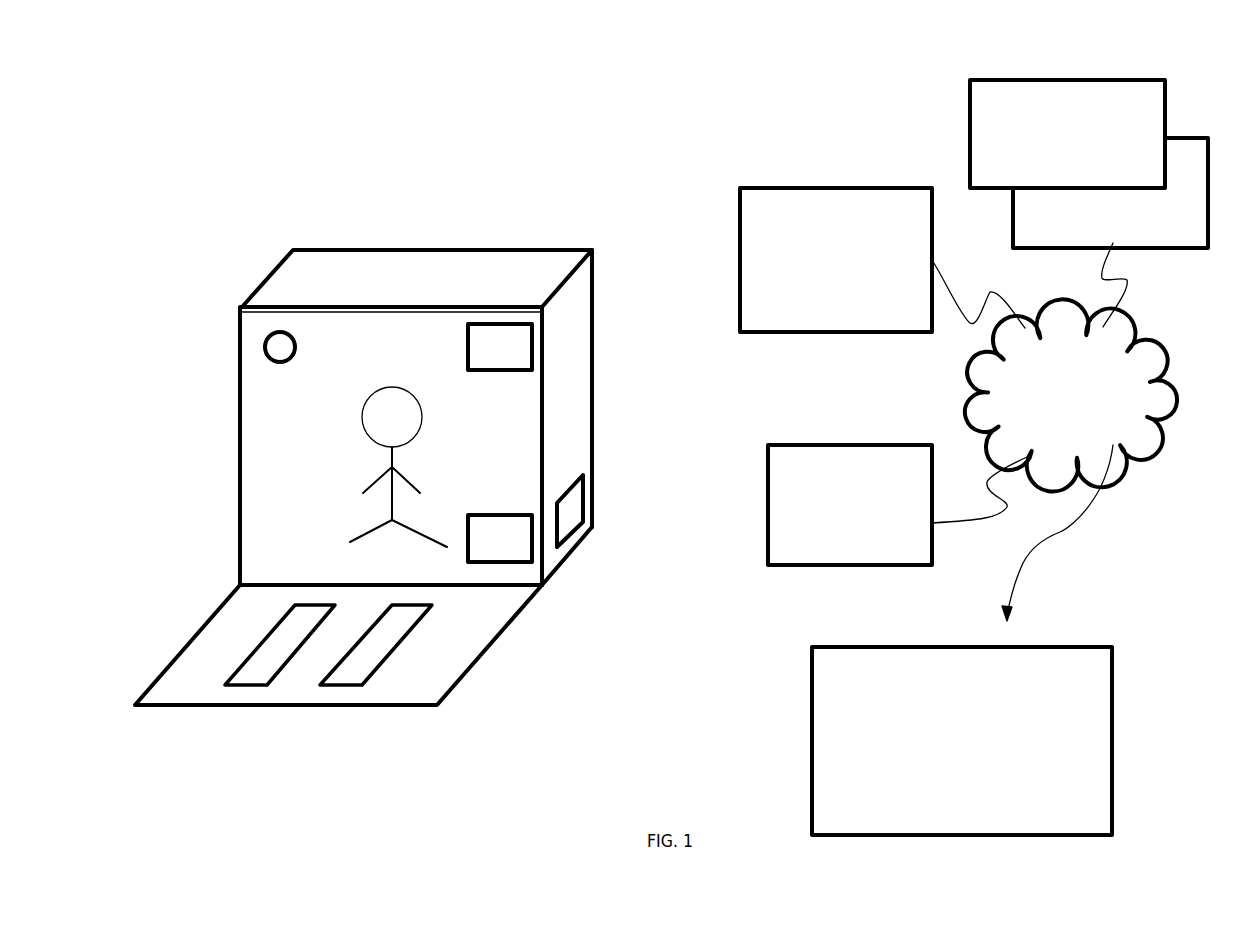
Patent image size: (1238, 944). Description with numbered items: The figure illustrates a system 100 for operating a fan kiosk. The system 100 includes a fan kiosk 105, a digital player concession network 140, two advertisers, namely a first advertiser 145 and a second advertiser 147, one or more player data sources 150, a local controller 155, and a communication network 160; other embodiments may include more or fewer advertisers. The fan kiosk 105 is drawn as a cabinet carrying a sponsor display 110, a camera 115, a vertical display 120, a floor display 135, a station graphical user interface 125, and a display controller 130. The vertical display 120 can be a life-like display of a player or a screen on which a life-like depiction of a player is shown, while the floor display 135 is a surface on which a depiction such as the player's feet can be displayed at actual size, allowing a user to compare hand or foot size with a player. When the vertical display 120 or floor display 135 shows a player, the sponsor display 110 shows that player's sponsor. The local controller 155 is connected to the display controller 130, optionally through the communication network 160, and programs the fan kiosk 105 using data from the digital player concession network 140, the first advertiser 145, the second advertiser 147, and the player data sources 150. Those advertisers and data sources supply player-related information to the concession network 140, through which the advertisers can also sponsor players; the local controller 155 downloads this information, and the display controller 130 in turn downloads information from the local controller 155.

The system 100 is at (207, 65).
The fan kiosk 105 is at (342, 243).
The sponsor display 110 is at (517, 197).
The camera 115 is at (277, 347).
The vertical display 120 is at (238, 430).
The station graphical user interface (GUI) 125 is at (527, 583).
The display controller 130 is at (572, 503).
The floor display 135 is at (388, 698).
The digital player concession network 140 is at (882, 260).
The Advertiser 1 145 is at (1067, 134).
The Advertiser 2 147 is at (1110, 232).
The player data sources 150 is at (897, 505).
The local controller 155 is at (568, 510).
The communication network 160 is at (1071, 460).